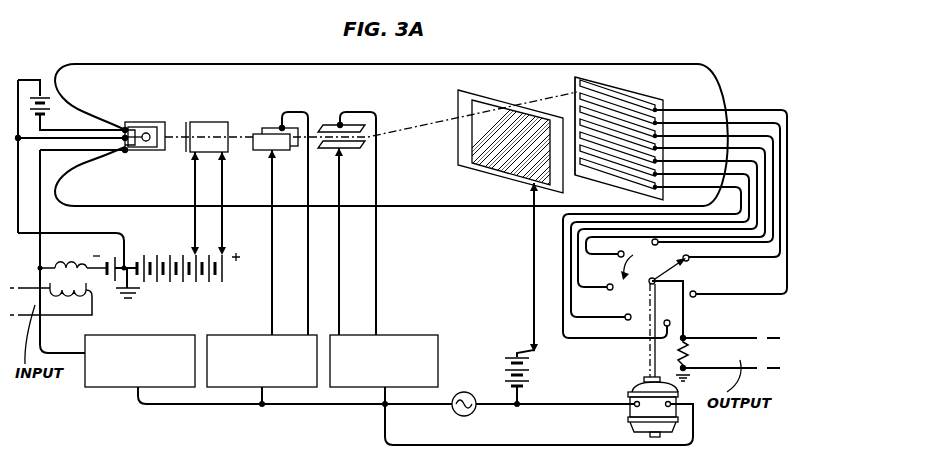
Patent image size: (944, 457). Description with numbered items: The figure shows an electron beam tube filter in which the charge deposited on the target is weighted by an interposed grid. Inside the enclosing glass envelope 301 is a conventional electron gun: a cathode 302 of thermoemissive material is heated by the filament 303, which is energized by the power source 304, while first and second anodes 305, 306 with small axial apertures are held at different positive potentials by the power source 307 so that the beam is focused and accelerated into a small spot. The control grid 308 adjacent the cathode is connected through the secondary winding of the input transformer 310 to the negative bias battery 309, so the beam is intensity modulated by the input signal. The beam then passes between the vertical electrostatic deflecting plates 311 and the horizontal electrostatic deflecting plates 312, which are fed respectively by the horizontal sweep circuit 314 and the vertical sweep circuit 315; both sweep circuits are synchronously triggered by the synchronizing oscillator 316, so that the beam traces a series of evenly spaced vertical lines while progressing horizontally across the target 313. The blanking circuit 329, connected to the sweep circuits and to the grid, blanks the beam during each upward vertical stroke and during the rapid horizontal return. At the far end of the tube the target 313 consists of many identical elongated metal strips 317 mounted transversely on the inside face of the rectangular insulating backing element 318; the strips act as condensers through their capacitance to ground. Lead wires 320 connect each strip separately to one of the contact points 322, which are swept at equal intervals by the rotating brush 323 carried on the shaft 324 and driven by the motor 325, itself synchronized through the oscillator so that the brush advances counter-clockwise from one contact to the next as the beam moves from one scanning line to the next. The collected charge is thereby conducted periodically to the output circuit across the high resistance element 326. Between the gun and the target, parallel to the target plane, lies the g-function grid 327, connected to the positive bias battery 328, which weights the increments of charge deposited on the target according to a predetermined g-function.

The glass envelope 301 is at (268, 64).
The cathode 302 is at (158, 150).
The filament 303 is at (146, 133).
The power source 304 is at (41, 95).
The first anode 305 is at (196, 122).
The second anode 306 is at (228, 121).
The power source 307 is at (162, 258).
The control grid 308 is at (137, 152).
The negative bias battery 309 is at (110, 284).
The input transformer 310 is at (58, 288).
The vertical electrostatic deflecting plates 311 is at (265, 150).
The horizontal electrostatic deflecting plates 312 is at (350, 148).
The target 313 is at (606, 80).
The horizontal sweep circuit 314 is at (242, 335).
The vertical sweep circuit 315 is at (418, 335).
The synchronizing oscillator 316 is at (460, 415).
The metal strips 317 is at (580, 102).
The insulating backing element 318 is at (625, 92).
The lead wires 320 is at (703, 147).
The contact points 322 is at (696, 292).
The rotating brush 323 is at (672, 262).
The shaft 324 is at (647, 355).
The motor 325 is at (628, 388).
The high resistance element 326 is at (690, 350).
The g-function grid 327 is at (458, 100).
The positive bias battery 328 is at (505, 355).
The blanking circuit 329 is at (115, 388).